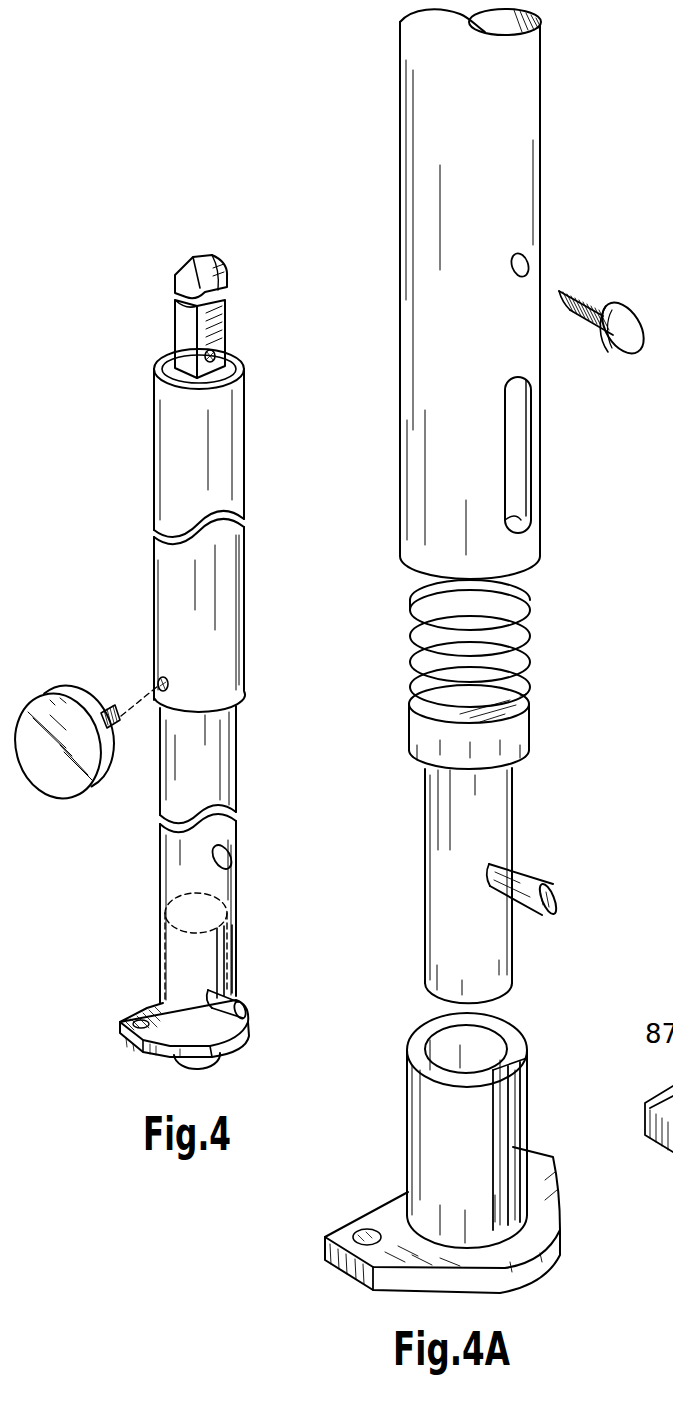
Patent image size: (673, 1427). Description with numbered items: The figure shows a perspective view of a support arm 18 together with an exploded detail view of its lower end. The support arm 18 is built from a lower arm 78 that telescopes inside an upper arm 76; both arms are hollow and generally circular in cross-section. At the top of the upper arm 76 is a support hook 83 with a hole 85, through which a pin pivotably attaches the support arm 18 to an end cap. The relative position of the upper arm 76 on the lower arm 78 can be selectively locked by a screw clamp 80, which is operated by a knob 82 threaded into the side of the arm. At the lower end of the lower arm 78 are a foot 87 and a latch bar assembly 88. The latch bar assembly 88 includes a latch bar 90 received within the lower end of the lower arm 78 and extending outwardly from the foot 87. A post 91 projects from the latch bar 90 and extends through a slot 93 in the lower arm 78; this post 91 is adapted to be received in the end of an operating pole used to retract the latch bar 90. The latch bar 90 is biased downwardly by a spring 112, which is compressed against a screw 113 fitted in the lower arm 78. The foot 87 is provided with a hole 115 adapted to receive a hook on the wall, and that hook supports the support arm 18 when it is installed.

In FIG. 4, the support arm 18 is at (285, 590).
In FIG. 4, the upper arm 76 is at (173, 478).
In FIG. 4, the lower arm 78 is at (212, 776).
In FIG. 4A, the lower arm 78 is at (523, 111).
In FIG. 4, the screw clamp 80 is at (157, 685).
In FIG. 4, the knob 82 is at (72, 698).
In FIG. 4, the support hook 83 is at (222, 293).
In FIG. 4, the hole 85 is at (216, 355).
In FIG. 4, the foot 87 is at (150, 1009).
In FIG. 4A, the foot 87 is at (408, 1143).
In FIG. 4, the latch bar assembly 88 is at (116, 1063).
In FIG. 4A, the latch bar assembly 88 is at (572, 786).
In FIG. 4, the latch bar 90 is at (194, 1060).
In FIG. 4A, the latch bar 90 is at (427, 908).
In FIG. 4, the post 91 is at (240, 986).
In FIG. 4A, the post 91 is at (530, 877).
In FIG. 4A, the slot 93 is at (527, 468).
In FIG. 4A, the spring 112 is at (530, 603).
In FIG. 4A, the screw 113 is at (647, 317).
In FIG. 4A, the hole 115 is at (370, 1229).